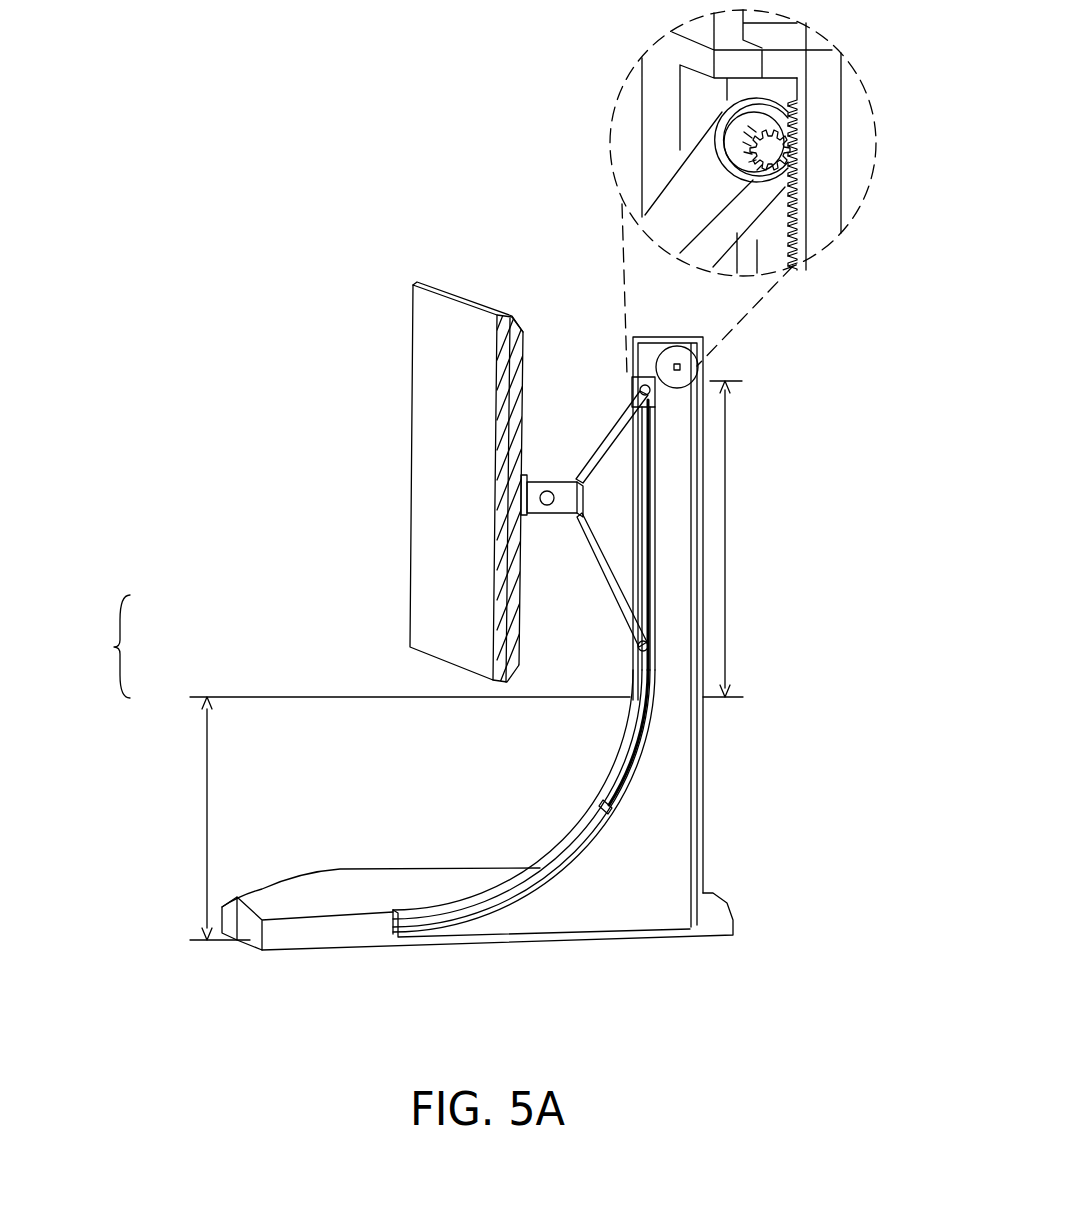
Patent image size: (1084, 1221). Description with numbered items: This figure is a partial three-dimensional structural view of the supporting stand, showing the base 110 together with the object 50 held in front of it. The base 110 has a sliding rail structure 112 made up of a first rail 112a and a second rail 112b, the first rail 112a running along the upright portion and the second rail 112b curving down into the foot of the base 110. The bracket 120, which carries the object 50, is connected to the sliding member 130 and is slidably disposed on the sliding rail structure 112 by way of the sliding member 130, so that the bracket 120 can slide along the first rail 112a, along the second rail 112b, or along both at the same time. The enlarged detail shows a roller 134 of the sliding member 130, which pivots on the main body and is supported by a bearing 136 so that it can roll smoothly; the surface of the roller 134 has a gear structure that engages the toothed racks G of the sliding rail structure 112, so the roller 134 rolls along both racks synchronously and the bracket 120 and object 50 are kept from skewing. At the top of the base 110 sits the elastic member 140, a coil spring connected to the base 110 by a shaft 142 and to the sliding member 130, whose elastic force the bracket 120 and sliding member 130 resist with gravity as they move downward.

The object 50 is at (435, 325).
The base 110 is at (660, 793).
The sliding rail structure 112 is at (411, 646).
The first rail 112a is at (725, 650).
The second rail 112b is at (207, 807).
The bracket 120 is at (528, 482).
The sliding member 130 is at (560, 503).
The roller 134 is at (775, 157).
The bearing 136 is at (745, 123).
The elastic member 140 is at (678, 355).
The shaft 142 is at (674, 367).
The toothed rack G is at (800, 105).